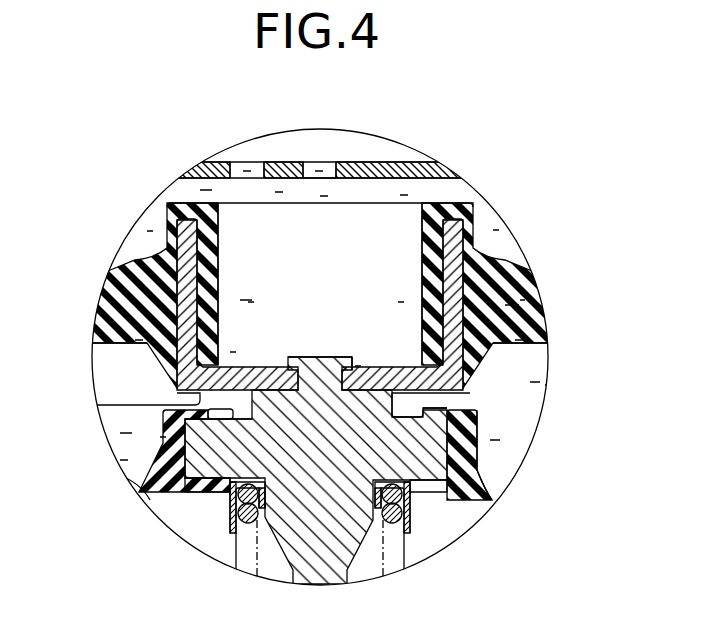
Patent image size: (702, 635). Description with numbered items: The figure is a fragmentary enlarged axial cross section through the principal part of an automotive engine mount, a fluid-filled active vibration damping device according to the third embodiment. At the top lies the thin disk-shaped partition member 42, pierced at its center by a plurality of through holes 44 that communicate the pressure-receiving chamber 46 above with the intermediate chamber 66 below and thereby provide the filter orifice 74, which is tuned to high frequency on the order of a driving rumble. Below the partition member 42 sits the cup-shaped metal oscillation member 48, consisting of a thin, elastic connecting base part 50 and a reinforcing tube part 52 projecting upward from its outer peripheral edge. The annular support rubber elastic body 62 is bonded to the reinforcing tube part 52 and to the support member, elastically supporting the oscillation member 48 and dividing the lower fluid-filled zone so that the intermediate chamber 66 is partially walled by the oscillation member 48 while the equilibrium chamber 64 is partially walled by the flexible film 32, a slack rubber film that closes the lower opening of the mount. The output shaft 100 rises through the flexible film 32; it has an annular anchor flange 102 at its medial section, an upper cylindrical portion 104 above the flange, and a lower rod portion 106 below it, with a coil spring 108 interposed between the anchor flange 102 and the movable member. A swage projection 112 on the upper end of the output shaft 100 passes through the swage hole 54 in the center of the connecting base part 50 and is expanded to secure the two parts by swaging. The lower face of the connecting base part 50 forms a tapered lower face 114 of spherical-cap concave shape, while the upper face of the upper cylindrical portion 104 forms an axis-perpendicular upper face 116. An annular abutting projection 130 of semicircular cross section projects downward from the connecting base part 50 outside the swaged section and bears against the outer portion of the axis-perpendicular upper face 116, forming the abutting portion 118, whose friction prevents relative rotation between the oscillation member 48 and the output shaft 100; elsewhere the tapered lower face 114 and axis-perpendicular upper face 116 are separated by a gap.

The flexible film 32 is at (150, 483).
The partition member 42 is at (412, 168).
The through holes 44 is at (240, 162).
The pressure-receiving chamber 46 is at (333, 155).
The oscillation member 48 is at (176, 276).
The connecting base part 50 is at (420, 388).
The reinforcing tube part 52 is at (452, 278).
The swage hole 54 is at (313, 357).
The support rubber elastic body 62 is at (125, 312).
The equilibrium chamber 64 is at (502, 416).
The intermediate chamber 66 is at (260, 309).
The filter orifice 74 is at (317, 163).
The output shaft 100 is at (360, 552).
The anchor flange 102 is at (387, 397).
The upper cylindrical portion 104 is at (368, 388).
The lower rod portion 106 is at (313, 540).
The coil spring 108 is at (393, 510).
The swage projection 112 is at (330, 360).
The tapered lower face 114 is at (195, 399).
The axis-perpendicular upper face 116 is at (224, 395).
The abutting portion 118 is at (420, 400).
The abutting projection 130 is at (252, 392).